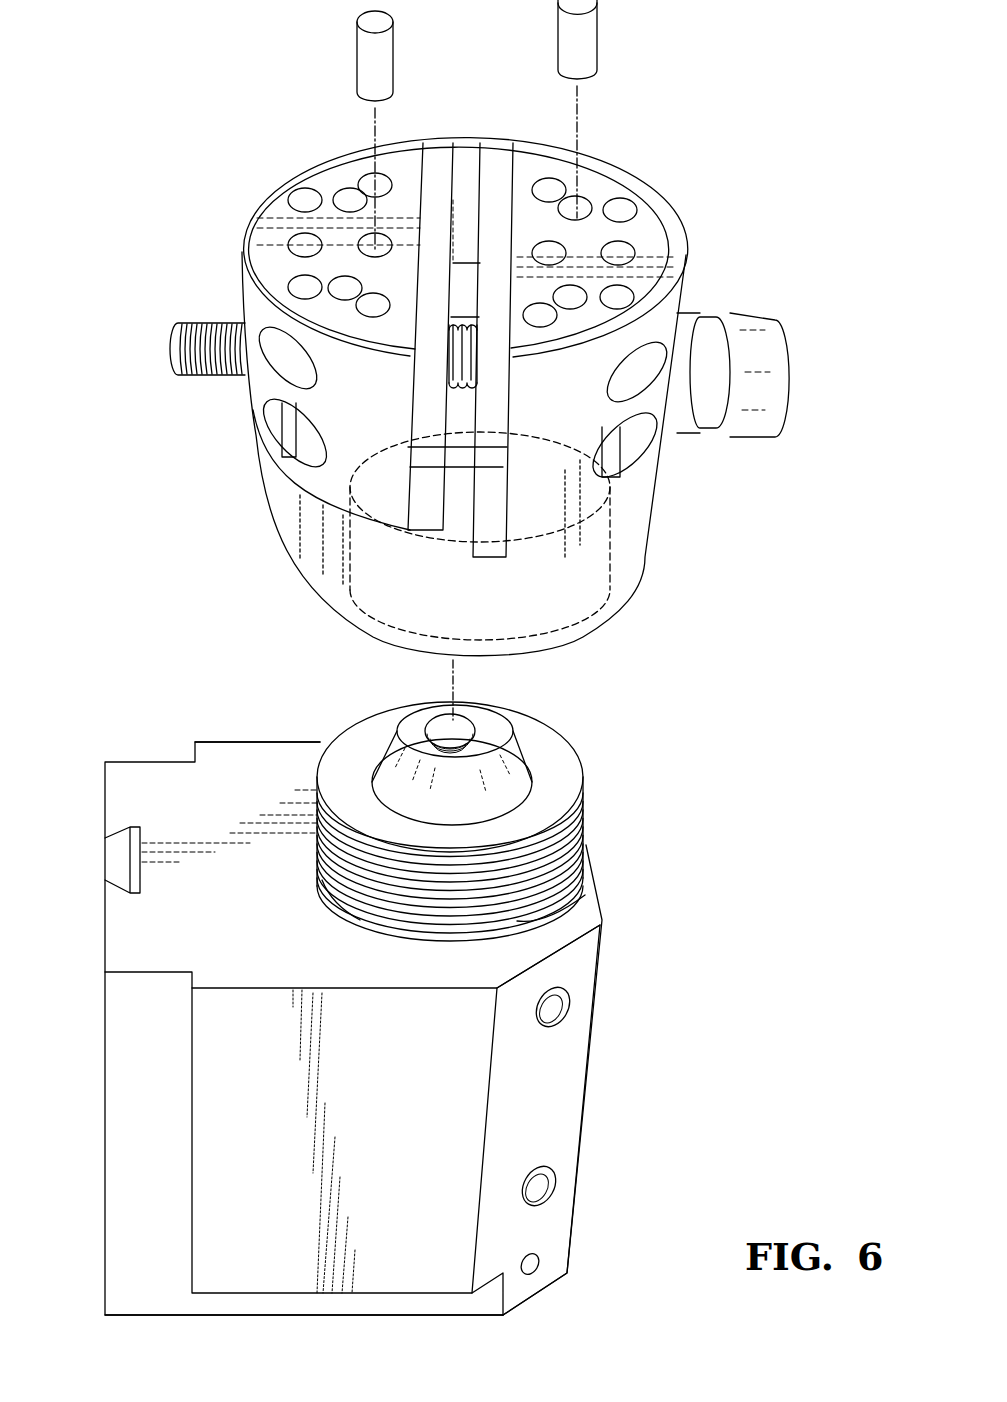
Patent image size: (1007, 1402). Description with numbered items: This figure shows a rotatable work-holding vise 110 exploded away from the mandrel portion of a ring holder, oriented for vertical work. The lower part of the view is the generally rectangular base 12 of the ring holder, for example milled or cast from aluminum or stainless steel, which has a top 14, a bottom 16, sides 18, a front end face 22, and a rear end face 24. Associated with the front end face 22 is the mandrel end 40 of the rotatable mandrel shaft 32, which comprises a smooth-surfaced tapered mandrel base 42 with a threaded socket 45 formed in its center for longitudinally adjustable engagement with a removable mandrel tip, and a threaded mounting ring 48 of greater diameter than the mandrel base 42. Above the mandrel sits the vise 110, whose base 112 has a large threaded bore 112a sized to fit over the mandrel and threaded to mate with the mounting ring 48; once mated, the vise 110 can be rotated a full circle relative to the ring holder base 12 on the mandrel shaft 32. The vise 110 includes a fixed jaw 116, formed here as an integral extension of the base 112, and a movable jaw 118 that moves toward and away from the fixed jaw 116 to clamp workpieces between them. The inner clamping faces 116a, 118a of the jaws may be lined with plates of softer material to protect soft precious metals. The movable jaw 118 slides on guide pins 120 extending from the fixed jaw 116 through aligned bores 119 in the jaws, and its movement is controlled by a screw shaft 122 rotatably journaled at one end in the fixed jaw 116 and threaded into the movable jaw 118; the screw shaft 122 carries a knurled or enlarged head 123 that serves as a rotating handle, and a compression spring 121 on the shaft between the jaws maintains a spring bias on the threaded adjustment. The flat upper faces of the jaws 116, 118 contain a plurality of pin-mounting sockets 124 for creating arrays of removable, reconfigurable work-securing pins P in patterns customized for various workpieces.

The work-securing pins P is at (368, 65).
The rotatable work-holding vise 110 is at (487, 328).
The vise base 112 is at (647, 550).
The threaded bore 112a is at (352, 600).
The fixed jaw 116 is at (677, 320).
The inner clamping face 116a is at (505, 168).
The movable jaw 118 is at (262, 393).
The inner clamping face 118a is at (445, 158).
The aligned bores 119 is at (273, 423).
The guide pins 120 is at (462, 272).
The compression spring 121 is at (470, 382).
The screw shaft 122 is at (185, 345).
The knurled or enlarged head 123 is at (775, 368).
The pin-mounting sockets 124 is at (305, 245).
The base 12 is at (375, 1007).
The top 14 is at (585, 1117).
The bottom 16 is at (104, 1115).
The sides 18 is at (206, 1190).
The front end face 22 is at (262, 773).
The rear end face 24 is at (195, 1317).
The mandrel shaft 32 is at (517, 921).
The mandrel end 40 is at (522, 800).
The mandrel base 42 is at (523, 766).
The threaded socket 45 is at (472, 732).
The threaded mounting ring 48 is at (583, 860).